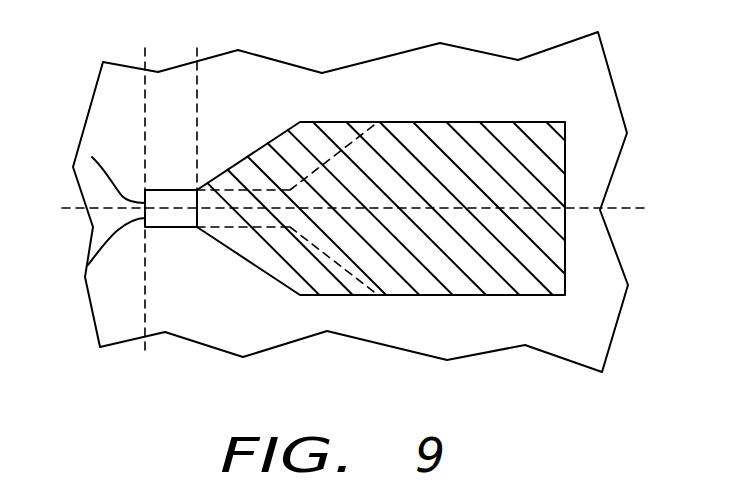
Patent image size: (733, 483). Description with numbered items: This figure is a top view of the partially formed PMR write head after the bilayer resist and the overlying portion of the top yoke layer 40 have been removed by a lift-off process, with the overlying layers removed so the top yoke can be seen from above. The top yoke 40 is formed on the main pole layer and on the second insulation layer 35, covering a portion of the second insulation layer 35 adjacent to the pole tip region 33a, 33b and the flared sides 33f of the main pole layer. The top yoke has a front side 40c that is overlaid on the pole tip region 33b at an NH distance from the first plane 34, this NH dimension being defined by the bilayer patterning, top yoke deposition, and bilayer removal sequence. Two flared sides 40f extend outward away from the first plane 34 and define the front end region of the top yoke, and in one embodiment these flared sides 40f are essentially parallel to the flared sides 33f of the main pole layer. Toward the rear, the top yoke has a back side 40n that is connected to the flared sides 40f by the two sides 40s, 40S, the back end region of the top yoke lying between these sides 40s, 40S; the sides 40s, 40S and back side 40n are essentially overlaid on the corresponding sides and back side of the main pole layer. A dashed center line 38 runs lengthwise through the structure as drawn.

The pole tip region 33a is at (92, 157).
The pole tip region 33b is at (88, 265).
The flared sides 33f is at (312, 172).
The first plane 34 is at (145, 40).
The second insulation layer 35 is at (600, 85).
The central axis 38 is at (360, 211).
The top yoke layer 40 is at (533, 152).
The front side 40c is at (197, 227).
The flared sides 40f is at (250, 156).
The back side 40n is at (565, 270).
The sides 40s is at (474, 121).
The sides 40S is at (490, 295).
The NH dimension NH is at (195, 46).